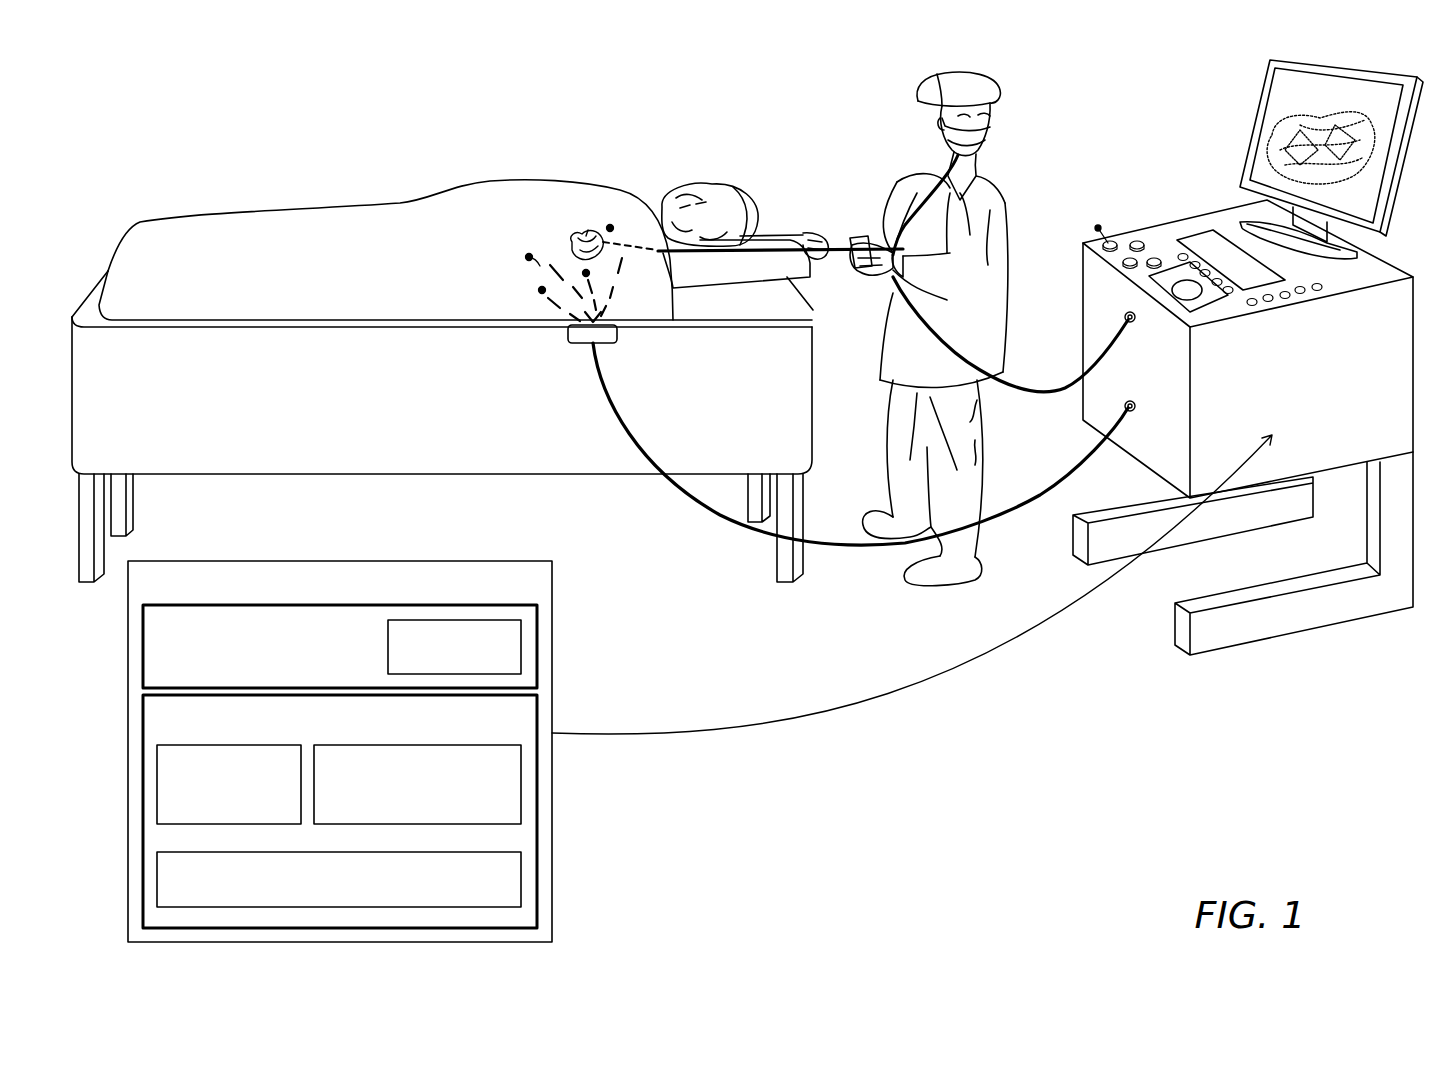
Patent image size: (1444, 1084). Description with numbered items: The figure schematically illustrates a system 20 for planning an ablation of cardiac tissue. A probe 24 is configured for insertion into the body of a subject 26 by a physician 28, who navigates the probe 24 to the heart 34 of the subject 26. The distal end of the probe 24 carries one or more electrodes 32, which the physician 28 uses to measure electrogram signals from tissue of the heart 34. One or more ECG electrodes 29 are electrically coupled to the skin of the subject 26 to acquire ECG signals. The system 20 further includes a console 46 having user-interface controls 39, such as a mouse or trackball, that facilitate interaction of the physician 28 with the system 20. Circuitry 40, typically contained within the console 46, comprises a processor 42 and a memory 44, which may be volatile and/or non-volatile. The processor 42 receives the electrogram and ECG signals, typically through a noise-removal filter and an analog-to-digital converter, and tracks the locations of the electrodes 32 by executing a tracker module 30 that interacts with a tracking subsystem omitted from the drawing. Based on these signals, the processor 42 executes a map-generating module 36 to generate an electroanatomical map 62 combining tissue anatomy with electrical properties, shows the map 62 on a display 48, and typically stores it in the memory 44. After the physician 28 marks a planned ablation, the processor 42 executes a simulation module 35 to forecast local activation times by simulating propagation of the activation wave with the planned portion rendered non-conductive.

The system 20 is at (1243, 794).
The probe 24 is at (797, 247).
The subject 26 is at (740, 187).
The physician 28 is at (994, 76).
The ECG electrodes 29 is at (586, 273).
The tracker module 30 is at (157, 790).
The electrodes 32 is at (578, 238).
The heart 34 is at (600, 233).
The simulation module 35 is at (157, 884).
The map-generating module 36 is at (521, 779).
The user-interface controls 39 is at (1098, 228).
The circuitry 40 is at (552, 567).
The processor 42 is at (537, 892).
The memory 44 is at (143, 652).
The console 46 is at (1196, 216).
The display 48 is at (1266, 98).
The electroanatomical map 62 is at (1371, 184).